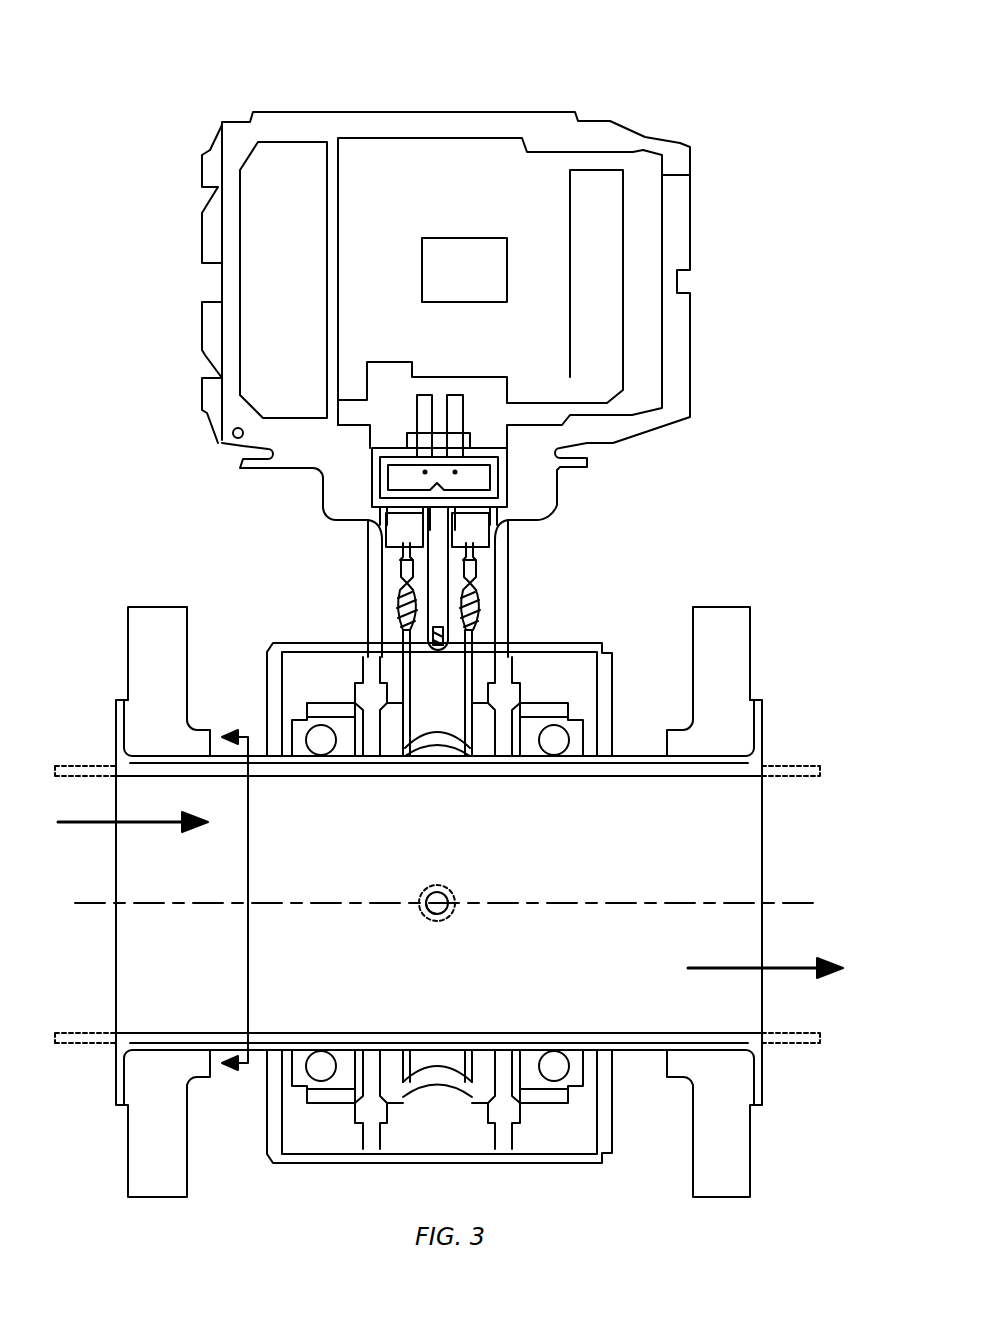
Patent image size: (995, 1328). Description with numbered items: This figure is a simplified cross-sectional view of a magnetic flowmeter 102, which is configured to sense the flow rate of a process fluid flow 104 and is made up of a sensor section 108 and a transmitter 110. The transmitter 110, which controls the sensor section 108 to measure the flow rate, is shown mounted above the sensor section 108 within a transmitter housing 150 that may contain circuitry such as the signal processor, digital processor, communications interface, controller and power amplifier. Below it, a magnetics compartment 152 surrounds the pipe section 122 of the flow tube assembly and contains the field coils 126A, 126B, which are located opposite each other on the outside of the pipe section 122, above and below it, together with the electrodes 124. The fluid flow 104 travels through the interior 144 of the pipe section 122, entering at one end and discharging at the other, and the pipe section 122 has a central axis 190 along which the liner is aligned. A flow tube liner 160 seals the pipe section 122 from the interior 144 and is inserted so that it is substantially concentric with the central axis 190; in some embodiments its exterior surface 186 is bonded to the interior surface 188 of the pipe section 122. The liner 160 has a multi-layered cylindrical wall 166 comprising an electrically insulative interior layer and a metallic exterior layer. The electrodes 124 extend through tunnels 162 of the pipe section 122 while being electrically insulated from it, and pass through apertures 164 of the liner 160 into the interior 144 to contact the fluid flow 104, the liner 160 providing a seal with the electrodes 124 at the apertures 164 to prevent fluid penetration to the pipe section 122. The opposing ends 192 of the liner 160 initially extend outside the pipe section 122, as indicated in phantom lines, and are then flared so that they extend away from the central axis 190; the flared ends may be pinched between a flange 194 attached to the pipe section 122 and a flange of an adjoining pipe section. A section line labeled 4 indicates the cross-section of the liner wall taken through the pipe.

The magnetic flowmeter 102 is at (123, 56).
The fluid flow 104 is at (92, 827).
The sensor section 108 is at (131, 552).
The transmitter 110 is at (232, 172).
The pipe section 122 is at (628, 1052).
The electrodes 124 is at (443, 910).
The coil 126A is at (310, 740).
The coil 126B is at (315, 1078).
The interior 144 is at (145, 950).
The transmitter housing 150 is at (672, 155).
The magnetics compartment 152 is at (612, 690).
The flow tube liner 160 is at (372, 1035).
The tunnels 162 is at (448, 888).
The apertures 164 is at (433, 913).
The multi-layered cylindrical wall 166 is at (352, 768).
The exterior surface 186 is at (640, 746).
The interior surface 188 is at (618, 776).
The central axis 190 is at (640, 896).
The opposing ends 192 is at (122, 716).
The flange 194 is at (135, 630).
The section line 4 is at (230, 902).